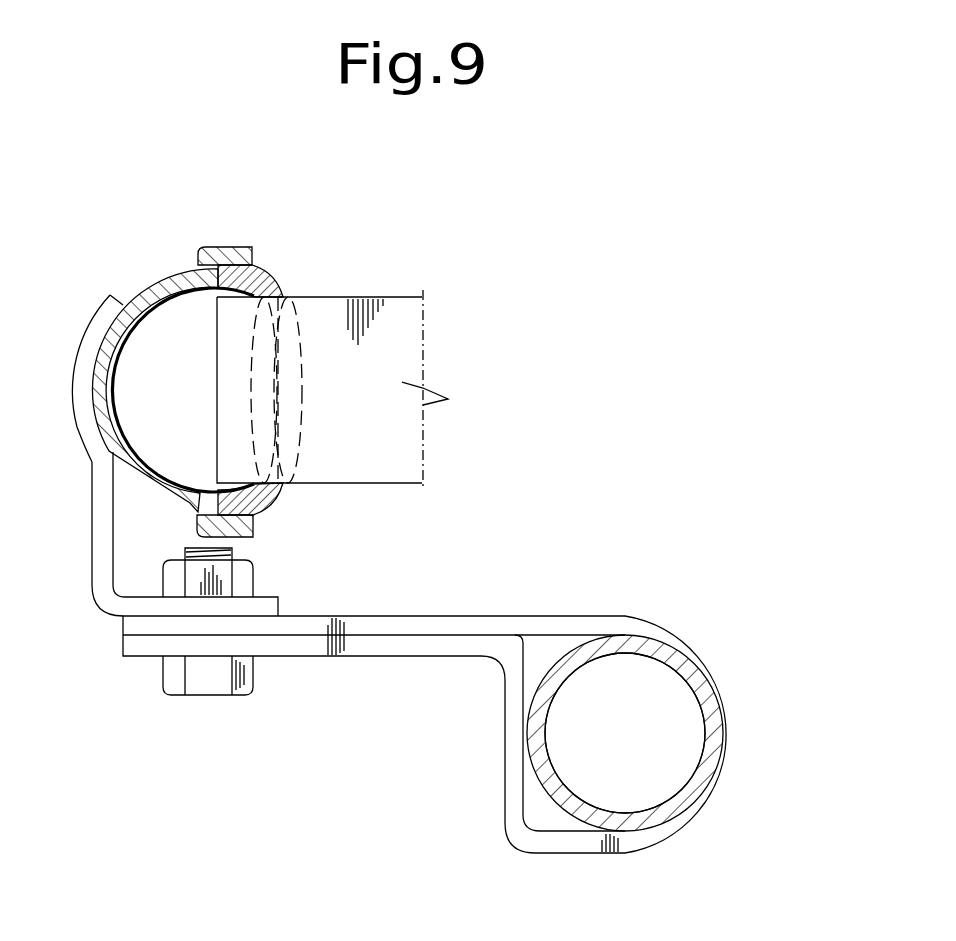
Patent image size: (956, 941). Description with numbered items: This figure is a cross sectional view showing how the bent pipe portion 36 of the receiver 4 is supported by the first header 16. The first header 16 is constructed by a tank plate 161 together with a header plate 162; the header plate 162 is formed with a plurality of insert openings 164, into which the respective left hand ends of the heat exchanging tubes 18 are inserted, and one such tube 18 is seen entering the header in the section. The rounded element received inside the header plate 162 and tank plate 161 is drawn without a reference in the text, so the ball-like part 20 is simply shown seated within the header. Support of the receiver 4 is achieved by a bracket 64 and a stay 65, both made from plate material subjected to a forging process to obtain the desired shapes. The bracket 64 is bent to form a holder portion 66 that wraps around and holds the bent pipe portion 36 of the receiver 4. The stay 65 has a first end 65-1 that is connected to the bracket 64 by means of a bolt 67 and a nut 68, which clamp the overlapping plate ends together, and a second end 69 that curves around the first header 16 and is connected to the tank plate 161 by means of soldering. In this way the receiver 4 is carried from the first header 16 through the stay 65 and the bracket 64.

The first header 16 is at (188, 240).
The tank plate 161 is at (160, 280).
The header plate 162 is at (256, 266).
The insert openings 164 is at (300, 296).
The heat exchanging tubes 18 is at (410, 300).
The ball 20 is at (120, 398).
The second end 69 is at (86, 345).
The stay 65 is at (92, 568).
The first end 65-1 is at (280, 605).
The nut 68 is at (254, 582).
The bolt 67 is at (165, 681).
The bracket 64 is at (440, 658).
The receiver 4 is at (545, 816).
The holder portion 66 is at (647, 626).
The bent pipe portion 36 is at (658, 800).